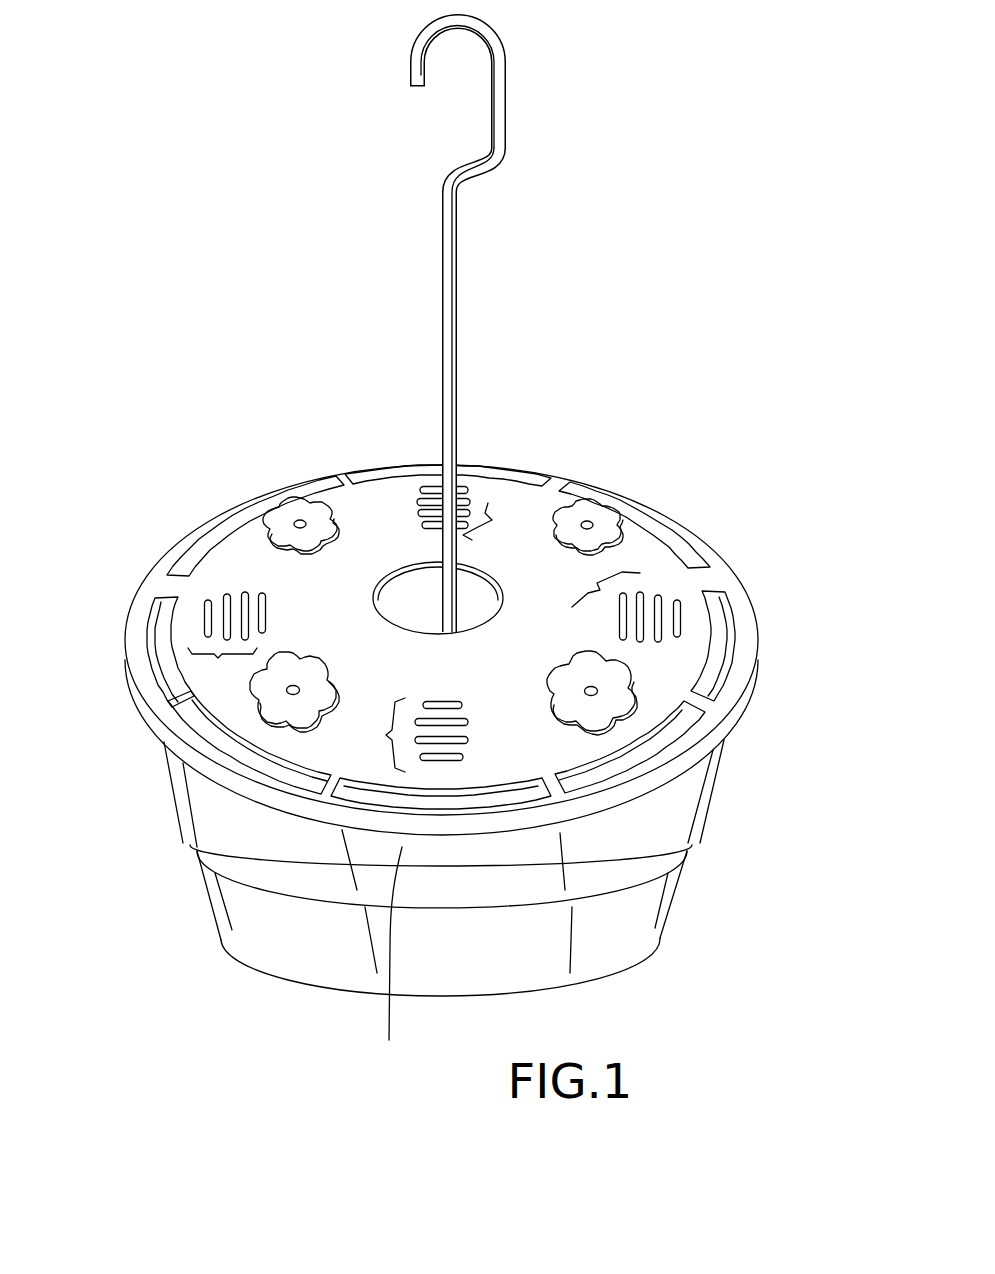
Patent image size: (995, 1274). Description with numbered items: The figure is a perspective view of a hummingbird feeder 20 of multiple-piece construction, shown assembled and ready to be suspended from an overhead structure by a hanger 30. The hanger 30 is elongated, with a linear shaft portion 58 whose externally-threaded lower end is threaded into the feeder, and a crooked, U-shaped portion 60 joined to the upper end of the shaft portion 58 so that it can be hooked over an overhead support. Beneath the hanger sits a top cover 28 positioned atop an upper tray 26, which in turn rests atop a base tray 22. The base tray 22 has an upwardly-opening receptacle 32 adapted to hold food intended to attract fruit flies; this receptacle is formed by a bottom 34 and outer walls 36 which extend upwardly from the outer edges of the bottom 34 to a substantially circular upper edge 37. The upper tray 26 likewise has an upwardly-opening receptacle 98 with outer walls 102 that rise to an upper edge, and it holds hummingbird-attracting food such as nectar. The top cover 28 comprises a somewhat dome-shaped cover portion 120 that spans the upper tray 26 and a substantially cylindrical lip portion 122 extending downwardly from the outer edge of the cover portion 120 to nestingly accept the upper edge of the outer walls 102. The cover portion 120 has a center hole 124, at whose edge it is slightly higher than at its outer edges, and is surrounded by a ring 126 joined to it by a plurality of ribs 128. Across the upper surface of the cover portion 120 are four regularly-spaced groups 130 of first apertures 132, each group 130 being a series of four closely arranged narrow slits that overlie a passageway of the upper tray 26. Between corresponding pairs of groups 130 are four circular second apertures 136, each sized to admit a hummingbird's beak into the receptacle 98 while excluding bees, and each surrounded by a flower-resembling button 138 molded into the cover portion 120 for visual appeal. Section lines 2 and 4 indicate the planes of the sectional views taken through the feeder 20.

The hummingbird feeder 20 is at (723, 418).
The base tray 22 is at (436, 948).
The upper tray 26 is at (172, 749).
The top cover 28 is at (527, 503).
The hanger 30 is at (512, 327).
The upwardly-opening receptacle 32 is at (652, 922).
The bottom 34 is at (555, 987).
The outer walls 36 is at (670, 887).
The upper edge 37 is at (197, 852).
The shaft portion 58 is at (458, 327).
The U-shaped portion 60 is at (501, 62).
The upwardly-opening receptacle 98 is at (710, 758).
The outer walls 102 is at (387, 957).
The cover portion 120 is at (380, 483).
The lip portion 122 is at (442, 566).
The center hole 124 is at (502, 597).
The ring 126 is at (235, 510).
The ribs 128 is at (333, 480).
The groups of first apertures 130 is at (434, 574).
The first apertures 132 is at (470, 500).
The second apertures 136 is at (302, 518).
The flower-resembling buttons 138 is at (425, 553).
The section line 2- 2 is at (143, 497).
The section line 4- 4 is at (112, 712).